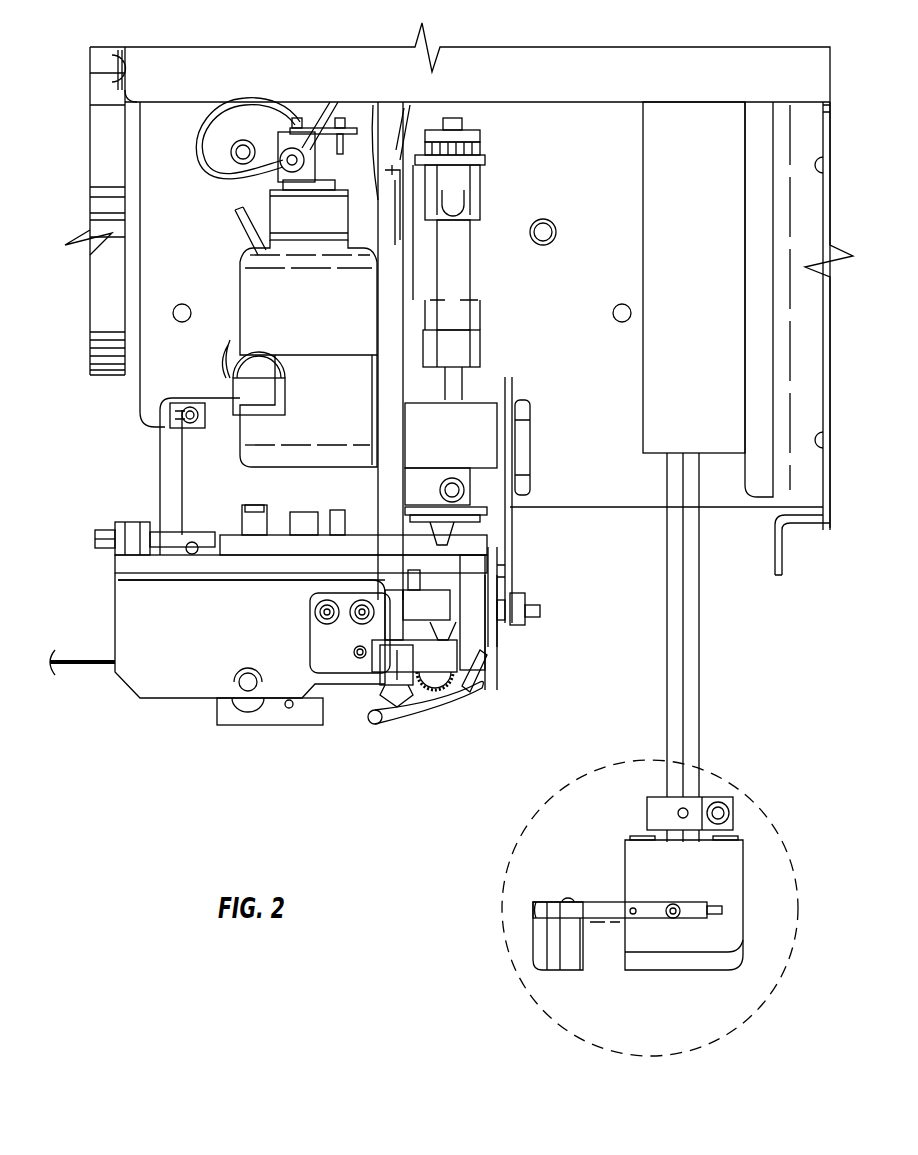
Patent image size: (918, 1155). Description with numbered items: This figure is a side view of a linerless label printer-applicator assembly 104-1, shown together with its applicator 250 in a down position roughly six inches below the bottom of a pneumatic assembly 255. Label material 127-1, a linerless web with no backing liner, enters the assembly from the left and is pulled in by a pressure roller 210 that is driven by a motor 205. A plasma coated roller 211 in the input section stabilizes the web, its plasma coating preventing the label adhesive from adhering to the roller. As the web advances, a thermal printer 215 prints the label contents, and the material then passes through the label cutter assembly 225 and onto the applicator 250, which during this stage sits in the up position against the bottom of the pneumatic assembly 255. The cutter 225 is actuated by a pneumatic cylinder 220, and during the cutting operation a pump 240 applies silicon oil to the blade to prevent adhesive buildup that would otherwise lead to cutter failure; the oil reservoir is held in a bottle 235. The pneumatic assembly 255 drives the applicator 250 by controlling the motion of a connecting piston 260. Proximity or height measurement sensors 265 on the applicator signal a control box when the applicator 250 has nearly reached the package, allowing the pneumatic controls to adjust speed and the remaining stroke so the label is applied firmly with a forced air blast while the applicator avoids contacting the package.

The linerless label printer-applicator assembly 104-1 is at (525, 51).
The pump 240 is at (305, 163).
The bottle 235 is at (248, 318).
The pneumatic cylinder 220 is at (455, 278).
The pneumatic assembly 255 is at (708, 335).
The motor 205 is at (195, 490).
The connecting piston 260 is at (697, 583).
The thermal printer 215 is at (435, 625).
The label cutter assembly 225 is at (480, 673).
The label material 127-1 is at (85, 662).
The plasma coated roller 211 is at (250, 706).
The pressure roller 210 is at (447, 690).
The applicator 250 is at (505, 922).
The proximity or height measurement sensors 265 is at (661, 915).